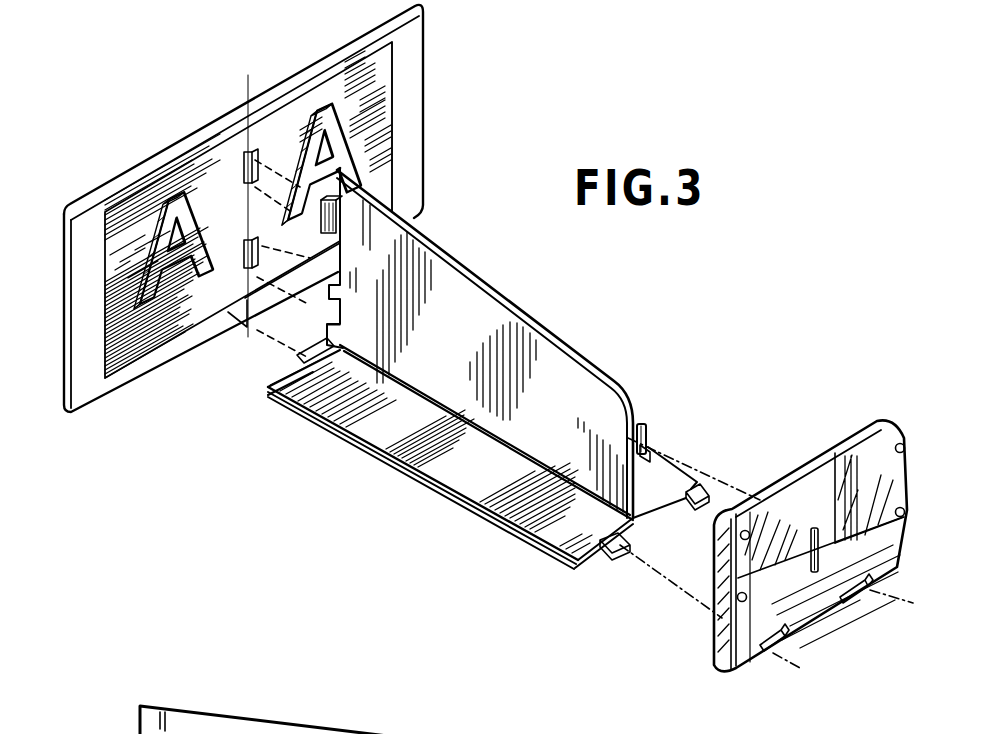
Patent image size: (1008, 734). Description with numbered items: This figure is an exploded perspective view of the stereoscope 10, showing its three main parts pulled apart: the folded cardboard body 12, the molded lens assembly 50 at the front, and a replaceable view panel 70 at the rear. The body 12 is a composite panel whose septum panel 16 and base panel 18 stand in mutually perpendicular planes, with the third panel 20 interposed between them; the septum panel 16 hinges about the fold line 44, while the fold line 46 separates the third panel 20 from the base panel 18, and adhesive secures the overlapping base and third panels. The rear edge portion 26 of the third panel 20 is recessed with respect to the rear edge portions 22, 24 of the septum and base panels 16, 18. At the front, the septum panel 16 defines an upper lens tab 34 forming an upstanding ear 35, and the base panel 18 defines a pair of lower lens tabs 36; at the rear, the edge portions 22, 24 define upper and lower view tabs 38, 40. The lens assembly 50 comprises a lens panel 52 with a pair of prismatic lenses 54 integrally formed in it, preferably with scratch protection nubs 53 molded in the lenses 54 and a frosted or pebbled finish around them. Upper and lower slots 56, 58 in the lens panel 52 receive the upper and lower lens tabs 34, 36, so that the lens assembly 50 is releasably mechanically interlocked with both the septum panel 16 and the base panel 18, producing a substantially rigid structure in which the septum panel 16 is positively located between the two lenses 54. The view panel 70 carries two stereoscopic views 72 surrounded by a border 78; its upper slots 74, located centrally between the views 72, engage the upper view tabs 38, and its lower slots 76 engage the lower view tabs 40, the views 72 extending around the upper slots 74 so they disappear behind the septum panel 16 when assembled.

The stereoscope 10 is at (373, 453).
The body 12 is at (547, 307).
The septum panel 16 is at (537, 403).
The base panel 18 is at (643, 500).
The third panel 20 is at (551, 525).
The rear edge portion of the septum panel 22 is at (343, 263).
The rear edge portion of the base panel 24 is at (266, 386).
The rear edge portion of the third panel 26 is at (317, 392).
The upper lens tab 34 is at (650, 449).
The upstanding ear 35 is at (643, 420).
The lower lens tabs 36 is at (700, 493).
The upper view tabs 38 is at (333, 221).
The lower view tabs 40 is at (330, 340).
The fold line 44 is at (474, 421).
The fold line 46 is at (469, 497).
The lens assembly 50 is at (845, 444).
The lens panel 52 is at (737, 643).
The scratch protection nubs 53 is at (733, 622).
The prismatic lenses 54 is at (883, 428).
The upper slot 56 is at (816, 526).
The lower slots 58 is at (860, 597).
The view panel 70 is at (216, 112).
The stereoscopic views 72 is at (362, 72).
The upper slots 74 is at (248, 150).
The lower slots 76 is at (237, 322).
The border 78 is at (417, 95).